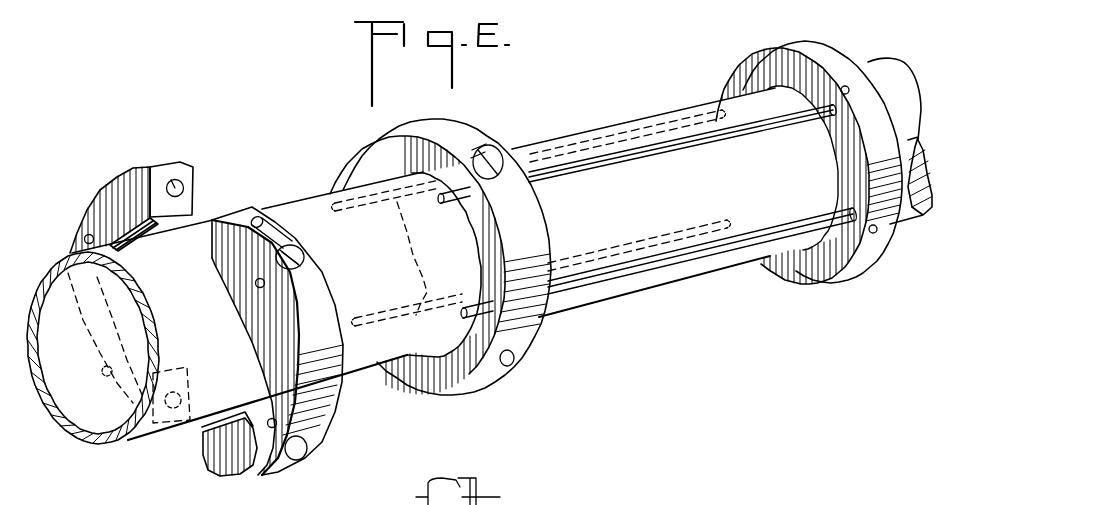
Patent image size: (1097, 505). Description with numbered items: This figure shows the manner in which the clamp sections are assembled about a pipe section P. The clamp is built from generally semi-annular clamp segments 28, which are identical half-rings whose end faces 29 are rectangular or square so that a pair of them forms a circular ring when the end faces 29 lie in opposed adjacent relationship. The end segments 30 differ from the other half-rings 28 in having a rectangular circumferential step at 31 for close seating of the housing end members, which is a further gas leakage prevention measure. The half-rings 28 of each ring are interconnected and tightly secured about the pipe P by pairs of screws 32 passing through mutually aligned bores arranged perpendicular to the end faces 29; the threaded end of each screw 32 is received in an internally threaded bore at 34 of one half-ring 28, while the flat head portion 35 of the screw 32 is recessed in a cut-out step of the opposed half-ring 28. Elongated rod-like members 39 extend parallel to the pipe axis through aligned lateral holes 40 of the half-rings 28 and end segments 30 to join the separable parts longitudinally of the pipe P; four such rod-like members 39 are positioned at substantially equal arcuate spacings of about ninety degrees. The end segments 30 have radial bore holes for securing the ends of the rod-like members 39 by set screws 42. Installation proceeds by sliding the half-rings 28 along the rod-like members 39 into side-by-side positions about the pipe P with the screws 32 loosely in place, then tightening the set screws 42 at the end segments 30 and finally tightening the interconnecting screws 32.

The pipe section P is at (99, 448).
The semi-annular clamp segment 28 is at (117, 173).
The end face 29 is at (192, 172).
The end segment 30 is at (746, 48).
The rectangular circumferential step 31 is at (830, 55).
The screw 32 is at (278, 225).
The internally threaded bore 34 is at (177, 183).
The flat head portion 35 is at (297, 272).
The rod-like member 39 is at (605, 160).
The lateral hole 40 is at (86, 236).
The set screw 42 is at (848, 86).